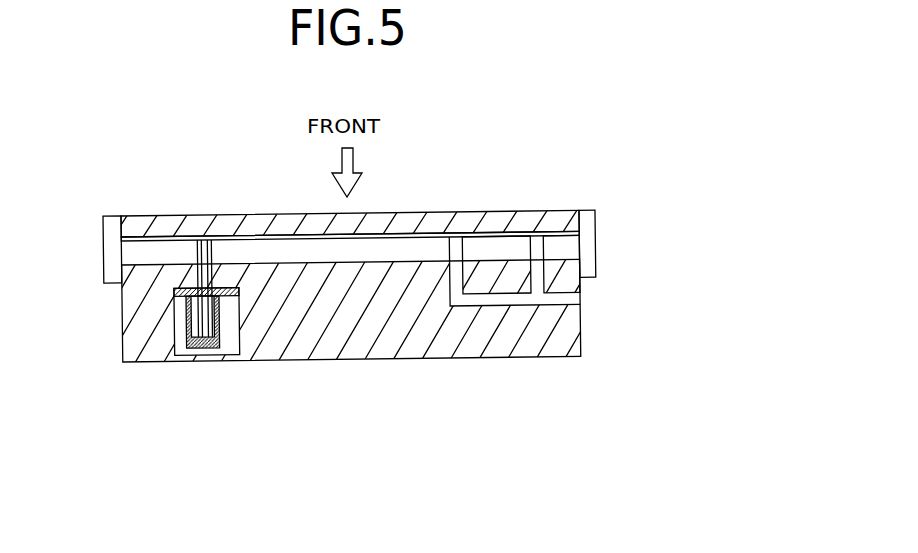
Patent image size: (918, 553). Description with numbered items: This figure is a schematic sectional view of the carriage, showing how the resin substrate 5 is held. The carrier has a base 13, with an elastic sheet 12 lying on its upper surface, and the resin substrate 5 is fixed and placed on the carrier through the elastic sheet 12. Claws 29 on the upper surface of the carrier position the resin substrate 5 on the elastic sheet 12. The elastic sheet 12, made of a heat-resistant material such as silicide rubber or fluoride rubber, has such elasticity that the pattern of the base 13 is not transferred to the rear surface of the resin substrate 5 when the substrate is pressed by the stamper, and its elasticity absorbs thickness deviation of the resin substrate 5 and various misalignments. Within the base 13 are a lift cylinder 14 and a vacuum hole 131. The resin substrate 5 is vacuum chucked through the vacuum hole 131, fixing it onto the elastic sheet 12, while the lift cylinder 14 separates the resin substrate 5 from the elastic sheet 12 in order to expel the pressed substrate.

The resin substrate 5 is at (205, 222).
The elastic sheet 12 is at (158, 243).
The base 13 is at (137, 310).
The lift cylinder 14 is at (202, 357).
The claws 29 is at (103, 237).
The vacuum hole 131 is at (535, 237).